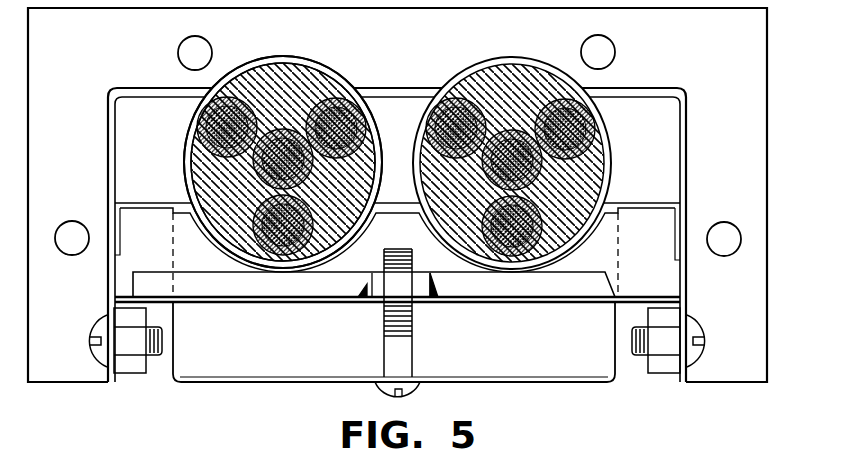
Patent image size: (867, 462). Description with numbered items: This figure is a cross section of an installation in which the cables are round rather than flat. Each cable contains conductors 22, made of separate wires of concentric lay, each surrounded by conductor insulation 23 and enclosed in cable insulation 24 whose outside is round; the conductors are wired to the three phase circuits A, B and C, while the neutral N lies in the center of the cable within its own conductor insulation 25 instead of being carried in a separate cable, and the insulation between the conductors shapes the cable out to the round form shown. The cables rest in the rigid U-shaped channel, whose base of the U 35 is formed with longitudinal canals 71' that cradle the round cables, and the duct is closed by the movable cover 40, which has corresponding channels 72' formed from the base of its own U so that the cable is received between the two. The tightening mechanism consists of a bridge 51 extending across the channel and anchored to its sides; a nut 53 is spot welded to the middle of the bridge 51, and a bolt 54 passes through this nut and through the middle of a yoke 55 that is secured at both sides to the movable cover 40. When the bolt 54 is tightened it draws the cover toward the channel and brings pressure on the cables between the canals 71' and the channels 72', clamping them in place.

The conductors 22 is at (281, 136).
The conductor insulation 23 is at (283, 139).
The cable insulation 24 is at (283, 141).
The conductor insulation 25 is at (241, 176).
The base of the U 35 is at (397, 96).
The movable cover 40 is at (146, 210).
The bridge 51 is at (278, 306).
The nut 53 is at (372, 285).
The bolt 54 is at (392, 358).
The yoke 55 is at (328, 383).
The canals 71' is at (283, 139).
The channels 72' is at (397, 276).
The circuit A is at (313, 95).
The circuit B is at (377, 248).
The circuit C is at (470, 95).
The neutral N is at (341, 110).